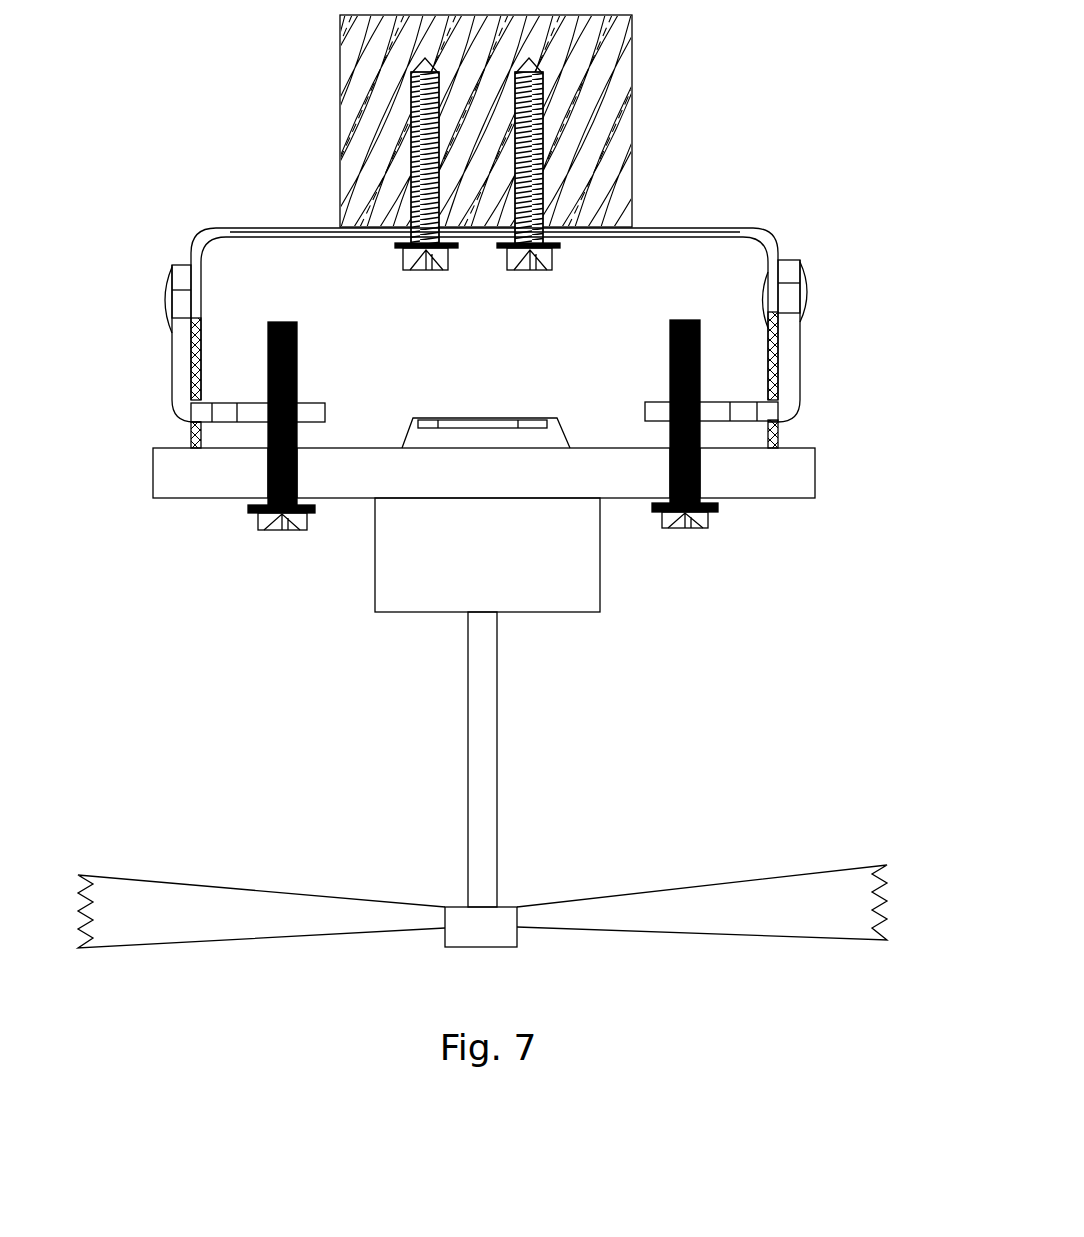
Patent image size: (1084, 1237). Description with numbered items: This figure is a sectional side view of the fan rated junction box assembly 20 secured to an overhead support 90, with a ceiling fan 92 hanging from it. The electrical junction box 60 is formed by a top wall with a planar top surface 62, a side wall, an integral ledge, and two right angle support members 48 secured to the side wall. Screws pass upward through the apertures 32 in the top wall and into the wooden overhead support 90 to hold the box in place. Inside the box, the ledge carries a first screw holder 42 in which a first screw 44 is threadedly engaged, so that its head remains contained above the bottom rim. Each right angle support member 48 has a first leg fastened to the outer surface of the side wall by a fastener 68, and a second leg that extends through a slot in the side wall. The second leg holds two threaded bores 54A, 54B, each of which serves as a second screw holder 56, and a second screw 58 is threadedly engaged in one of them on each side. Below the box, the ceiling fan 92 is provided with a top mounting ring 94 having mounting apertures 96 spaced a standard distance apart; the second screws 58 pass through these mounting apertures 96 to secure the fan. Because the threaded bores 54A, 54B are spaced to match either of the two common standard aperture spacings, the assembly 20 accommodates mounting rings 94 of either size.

The fan rated junction box assembly 20 is at (868, 163).
The apertures 32 is at (560, 245).
The first screw holder 42 is at (523, 428).
The first screw 44 is at (507, 270).
The right angle support members 48 is at (800, 395).
The threaded bore 54A is at (672, 400).
The threaded bore 54B is at (730, 400).
The second screw holder 56 is at (733, 420).
The second screw 58 is at (697, 528).
The electrical junction box 60 is at (750, 227).
The planar top surface 62 is at (667, 227).
The fastener 68 is at (808, 282).
The overhead support 90 is at (597, 87).
The ceiling fan 92 is at (497, 757).
The top mounting ring 94 is at (815, 470).
The mounting apertures 96 is at (670, 497).